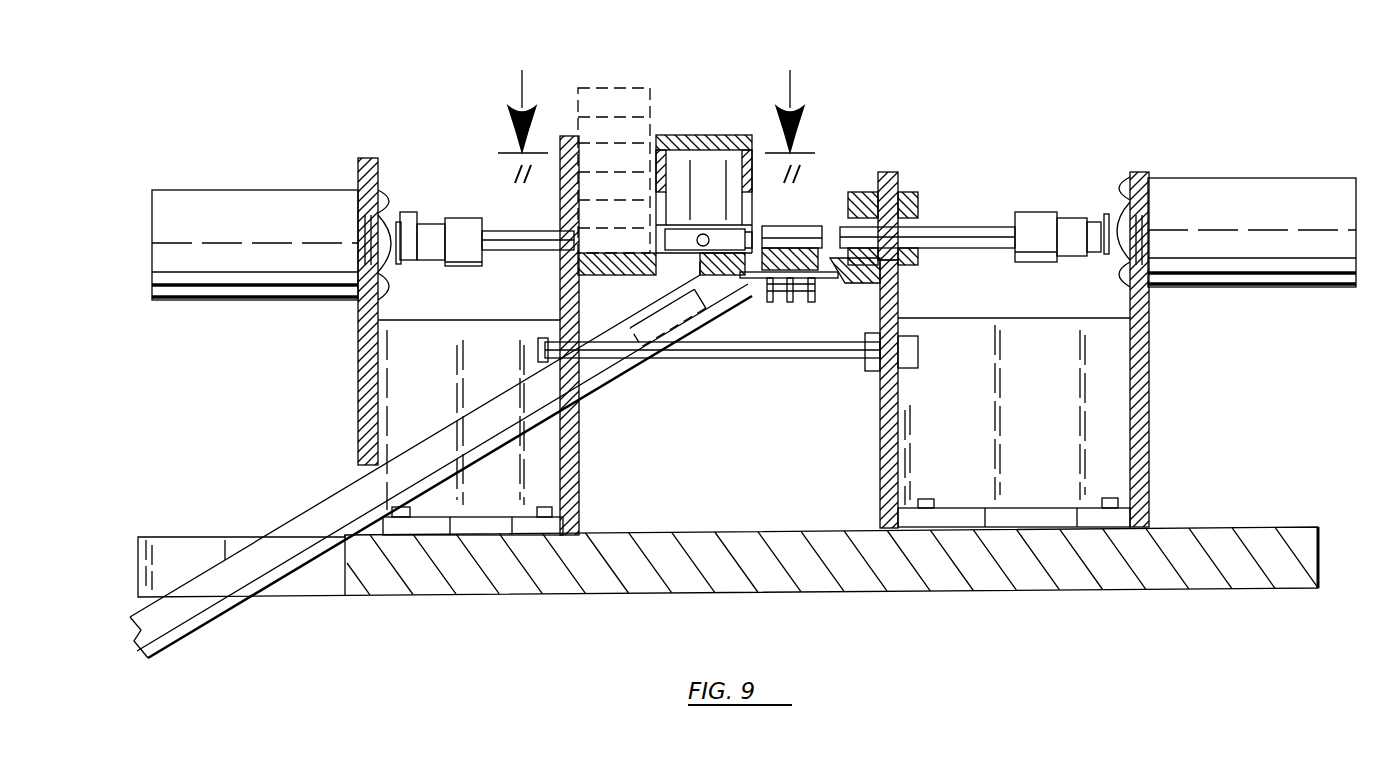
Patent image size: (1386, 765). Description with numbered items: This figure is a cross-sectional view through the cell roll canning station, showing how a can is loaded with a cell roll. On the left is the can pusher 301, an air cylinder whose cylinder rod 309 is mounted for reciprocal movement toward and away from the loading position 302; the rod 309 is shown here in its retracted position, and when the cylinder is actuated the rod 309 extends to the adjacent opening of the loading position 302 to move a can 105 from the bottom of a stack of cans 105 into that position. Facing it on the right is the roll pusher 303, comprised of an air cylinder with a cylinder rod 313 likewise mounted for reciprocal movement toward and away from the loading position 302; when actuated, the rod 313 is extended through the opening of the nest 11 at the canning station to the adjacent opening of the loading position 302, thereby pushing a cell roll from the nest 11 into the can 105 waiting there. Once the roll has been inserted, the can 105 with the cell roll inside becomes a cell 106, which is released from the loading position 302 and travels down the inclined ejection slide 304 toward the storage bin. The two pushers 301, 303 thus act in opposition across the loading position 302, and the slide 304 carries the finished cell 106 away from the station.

The can pusher 301 is at (272, 184).
The roll pusher 303 is at (1232, 171).
The can 105 is at (612, 88).
The cylinder rod 309 is at (530, 232).
The loading position 302 is at (742, 240).
The cylinder rod 313 is at (958, 232).
The cell 106 is at (678, 314).
The ejection slide 304 is at (610, 372).
The nest 11 is at (820, 278).